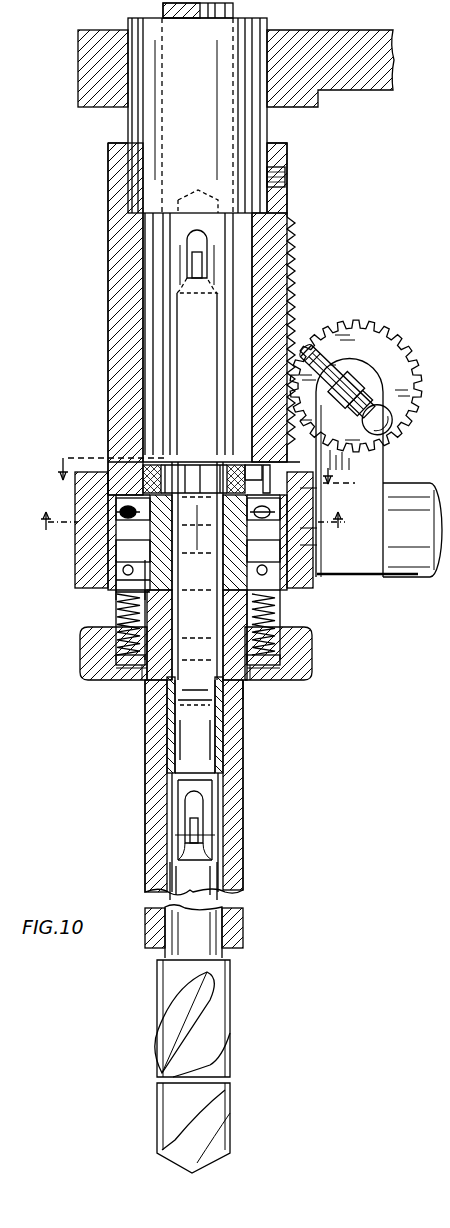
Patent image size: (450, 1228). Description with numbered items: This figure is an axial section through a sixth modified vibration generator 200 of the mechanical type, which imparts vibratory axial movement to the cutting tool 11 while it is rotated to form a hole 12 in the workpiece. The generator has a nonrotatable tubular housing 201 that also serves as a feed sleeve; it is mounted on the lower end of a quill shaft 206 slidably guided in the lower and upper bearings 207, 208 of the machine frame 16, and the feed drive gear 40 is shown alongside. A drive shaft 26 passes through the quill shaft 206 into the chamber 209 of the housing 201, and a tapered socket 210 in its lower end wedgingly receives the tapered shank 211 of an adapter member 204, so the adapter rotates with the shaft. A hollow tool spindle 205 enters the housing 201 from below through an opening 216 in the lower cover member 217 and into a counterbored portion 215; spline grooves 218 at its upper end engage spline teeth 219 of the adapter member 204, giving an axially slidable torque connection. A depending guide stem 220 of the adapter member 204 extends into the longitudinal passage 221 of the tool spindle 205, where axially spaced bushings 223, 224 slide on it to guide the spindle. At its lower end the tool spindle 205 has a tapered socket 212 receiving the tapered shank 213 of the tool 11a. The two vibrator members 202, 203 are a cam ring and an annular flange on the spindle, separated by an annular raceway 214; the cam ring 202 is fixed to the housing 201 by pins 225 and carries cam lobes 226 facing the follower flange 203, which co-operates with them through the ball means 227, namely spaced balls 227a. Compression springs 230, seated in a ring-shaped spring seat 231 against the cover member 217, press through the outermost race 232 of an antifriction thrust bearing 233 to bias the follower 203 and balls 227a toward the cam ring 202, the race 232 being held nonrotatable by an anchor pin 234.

The drive shaft 26 is at (233, 12).
The upper bearing 208 is at (78, 70).
The machine frame 16 is at (348, 97).
The quill shaft 206 is at (138, 128).
The chamber 209 is at (152, 305).
The tapered socket 210 is at (223, 310).
The tapered shank 211 is at (213, 333).
The drive gear 40 is at (377, 326).
The vibration generator 200 is at (107, 375).
The tubular housing 201 is at (118, 398).
The annular raceway 214 is at (120, 441).
The spline grooves 218 is at (242, 437).
The spline teeth 219 is at (187, 458).
The pins 225 is at (300, 438).
The hole 12 is at (230, 530).
The cutting tool 11 is at (198, 473).
The vibrator member 202 is at (300, 488).
The cam lobes 226 is at (272, 512).
The ball means 227 is at (300, 528).
The balls 227a is at (300, 545).
The bushing 223 is at (252, 548).
The outermost race 232 is at (170, 575).
The lower bearing 207 is at (90, 540).
The vibrator member 203 is at (305, 583).
The adapter member 204 is at (120, 555).
The antifriction thrust bearing 233 is at (123, 572).
The anchor pin 234 is at (110, 598).
The counterbored portion 215 is at (275, 607).
The compression springs 230 is at (280, 630).
The lower cover member 217 is at (305, 658).
The guide stem 220 is at (150, 675).
The spring seat 231 is at (275, 668).
The longitudinal passage 221 is at (167, 700).
The opening 216 is at (262, 682).
The tool spindle 205 is at (152, 738).
The bushing 224 is at (225, 740).
The tapered shank 213 is at (205, 870).
The tapered socket 212 is at (243, 928).
The tool 11a is at (212, 1097).